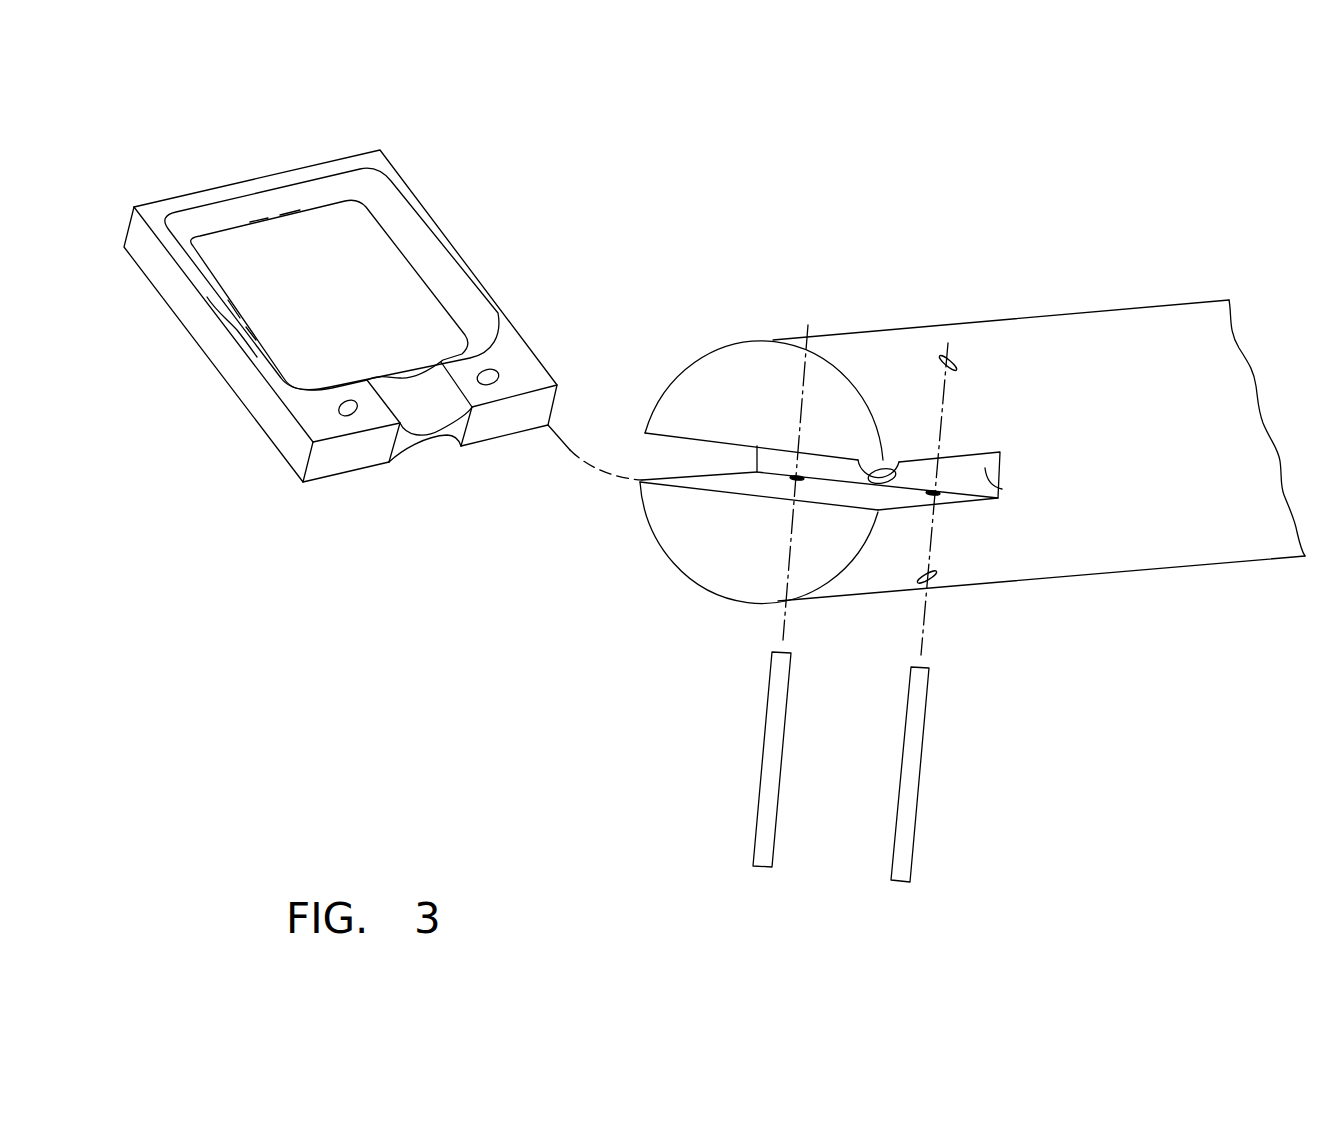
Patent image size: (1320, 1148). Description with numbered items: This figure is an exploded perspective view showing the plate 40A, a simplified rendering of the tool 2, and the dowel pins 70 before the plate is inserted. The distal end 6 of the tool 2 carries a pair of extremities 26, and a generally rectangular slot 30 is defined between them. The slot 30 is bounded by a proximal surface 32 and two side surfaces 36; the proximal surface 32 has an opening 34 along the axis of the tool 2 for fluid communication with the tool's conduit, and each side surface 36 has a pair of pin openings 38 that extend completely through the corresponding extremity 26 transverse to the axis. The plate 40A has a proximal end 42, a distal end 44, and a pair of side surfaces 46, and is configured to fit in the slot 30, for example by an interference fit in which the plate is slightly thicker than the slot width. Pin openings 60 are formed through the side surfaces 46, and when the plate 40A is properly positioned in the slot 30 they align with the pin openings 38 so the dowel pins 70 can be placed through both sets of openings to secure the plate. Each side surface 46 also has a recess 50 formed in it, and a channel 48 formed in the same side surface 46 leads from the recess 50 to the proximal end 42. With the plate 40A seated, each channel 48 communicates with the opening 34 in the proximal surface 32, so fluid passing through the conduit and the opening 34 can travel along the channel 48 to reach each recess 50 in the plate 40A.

The tool 2 is at (998, 196).
The distal end 6 is at (692, 340).
The extremity 26 is at (740, 572).
The slot 30 is at (646, 452).
The proximal surface 32 is at (1000, 489).
The opening 34 is at (868, 474).
The side surface 36 is at (762, 488).
The pin opening 38 is at (950, 363).
The plate 40A is at (213, 170).
The proximal end 42 is at (324, 461).
The distal end 44 is at (273, 173).
The side surface 46 is at (302, 404).
The channel 48 is at (413, 408).
The recess 50 is at (346, 312).
The pin opening 60 is at (493, 376).
The dowel pin 70 is at (913, 793).